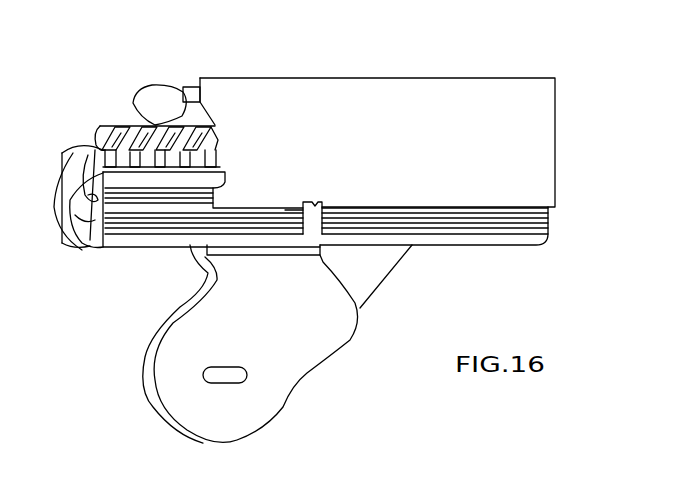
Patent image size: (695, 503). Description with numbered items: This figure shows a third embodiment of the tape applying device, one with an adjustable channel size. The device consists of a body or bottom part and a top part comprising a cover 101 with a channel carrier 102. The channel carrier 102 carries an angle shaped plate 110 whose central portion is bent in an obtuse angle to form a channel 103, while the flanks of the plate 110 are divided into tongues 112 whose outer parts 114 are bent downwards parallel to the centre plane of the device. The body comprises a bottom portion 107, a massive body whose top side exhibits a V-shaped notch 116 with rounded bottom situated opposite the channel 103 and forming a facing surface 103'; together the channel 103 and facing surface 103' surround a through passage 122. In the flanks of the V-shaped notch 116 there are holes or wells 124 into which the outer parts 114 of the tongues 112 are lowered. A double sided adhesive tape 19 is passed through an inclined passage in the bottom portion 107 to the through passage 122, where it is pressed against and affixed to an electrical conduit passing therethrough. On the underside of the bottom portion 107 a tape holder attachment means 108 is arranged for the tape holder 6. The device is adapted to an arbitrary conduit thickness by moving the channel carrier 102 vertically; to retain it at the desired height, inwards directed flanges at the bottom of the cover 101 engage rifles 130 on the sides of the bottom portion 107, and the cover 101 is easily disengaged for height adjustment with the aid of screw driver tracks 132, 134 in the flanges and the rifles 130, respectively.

The cover 101 is at (473, 98).
The channel carrier 102 is at (180, 102).
The channel 103 is at (62, 185).
The facing surface 103' is at (64, 262).
The bottom portion 107 is at (488, 242).
The tape holder attachment means 108 is at (288, 256).
The angle shaped plate 110 is at (122, 122).
The tongues 112 is at (112, 135).
The outer parts of the tongues 114 is at (215, 158).
The V-shaped notch 116 is at (90, 242).
The through passage 122 is at (100, 150).
The holes or wells 124 is at (78, 216).
The rifles 130 is at (408, 216).
The screw driver track 132 is at (325, 202).
The screw driver track 134 is at (300, 206).
The double sided adhesive tape 19 is at (383, 283).
The tape holder 6 is at (347, 336).